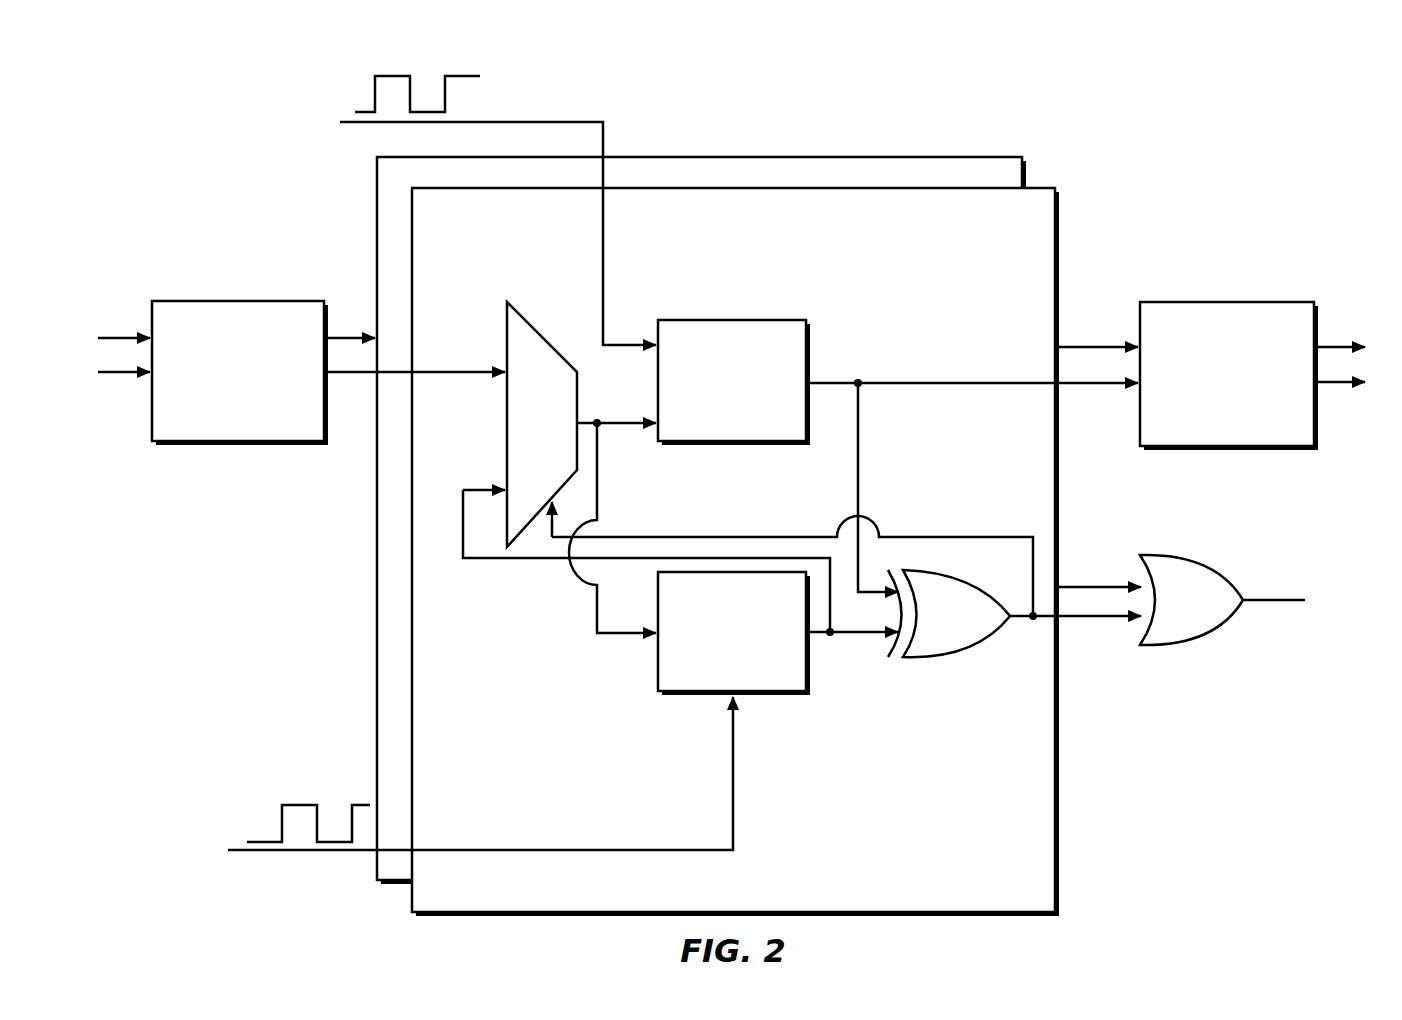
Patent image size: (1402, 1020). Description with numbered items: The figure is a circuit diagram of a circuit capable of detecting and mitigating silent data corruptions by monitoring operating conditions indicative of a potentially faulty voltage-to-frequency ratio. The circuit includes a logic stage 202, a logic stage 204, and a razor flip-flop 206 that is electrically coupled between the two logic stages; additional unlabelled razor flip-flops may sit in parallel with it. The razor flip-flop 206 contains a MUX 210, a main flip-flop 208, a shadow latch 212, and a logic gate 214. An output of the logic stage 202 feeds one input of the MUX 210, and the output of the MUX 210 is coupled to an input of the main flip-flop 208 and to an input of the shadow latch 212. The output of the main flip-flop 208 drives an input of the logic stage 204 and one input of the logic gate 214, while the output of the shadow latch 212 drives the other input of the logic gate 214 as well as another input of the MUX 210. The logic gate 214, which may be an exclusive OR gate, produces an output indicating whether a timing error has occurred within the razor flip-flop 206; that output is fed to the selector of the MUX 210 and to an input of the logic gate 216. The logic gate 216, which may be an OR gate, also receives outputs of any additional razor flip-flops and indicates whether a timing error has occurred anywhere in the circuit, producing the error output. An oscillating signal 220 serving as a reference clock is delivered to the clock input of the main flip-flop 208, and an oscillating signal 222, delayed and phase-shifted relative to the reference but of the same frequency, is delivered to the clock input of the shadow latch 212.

The logic stage 202 is at (301, 373).
The logic stage 204 is at (1210, 376).
The razor flip-flop 206 is at (718, 536).
The main flip-flop 208 is at (898, 456).
The MUX 210 is at (748, 467).
The shadow latch 212 is at (778, 633).
The logic gate 214 is at (1014, 613).
The logic gate 216 is at (1213, 600).
The oscillating signal 220 is at (462, 210).
The oscillating signal 222 is at (444, 789).